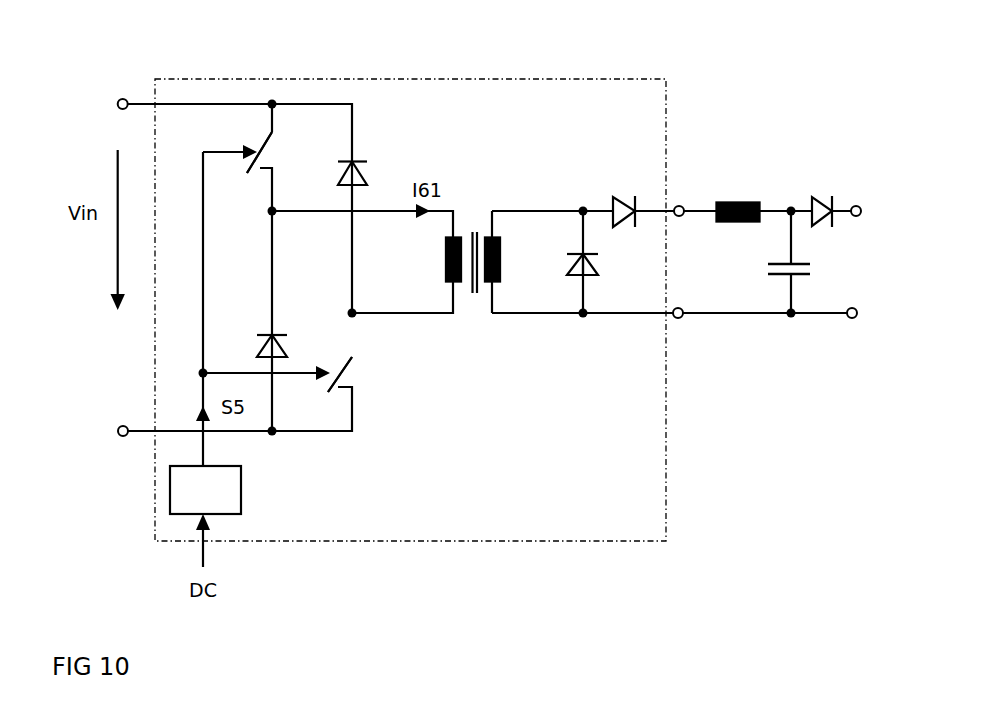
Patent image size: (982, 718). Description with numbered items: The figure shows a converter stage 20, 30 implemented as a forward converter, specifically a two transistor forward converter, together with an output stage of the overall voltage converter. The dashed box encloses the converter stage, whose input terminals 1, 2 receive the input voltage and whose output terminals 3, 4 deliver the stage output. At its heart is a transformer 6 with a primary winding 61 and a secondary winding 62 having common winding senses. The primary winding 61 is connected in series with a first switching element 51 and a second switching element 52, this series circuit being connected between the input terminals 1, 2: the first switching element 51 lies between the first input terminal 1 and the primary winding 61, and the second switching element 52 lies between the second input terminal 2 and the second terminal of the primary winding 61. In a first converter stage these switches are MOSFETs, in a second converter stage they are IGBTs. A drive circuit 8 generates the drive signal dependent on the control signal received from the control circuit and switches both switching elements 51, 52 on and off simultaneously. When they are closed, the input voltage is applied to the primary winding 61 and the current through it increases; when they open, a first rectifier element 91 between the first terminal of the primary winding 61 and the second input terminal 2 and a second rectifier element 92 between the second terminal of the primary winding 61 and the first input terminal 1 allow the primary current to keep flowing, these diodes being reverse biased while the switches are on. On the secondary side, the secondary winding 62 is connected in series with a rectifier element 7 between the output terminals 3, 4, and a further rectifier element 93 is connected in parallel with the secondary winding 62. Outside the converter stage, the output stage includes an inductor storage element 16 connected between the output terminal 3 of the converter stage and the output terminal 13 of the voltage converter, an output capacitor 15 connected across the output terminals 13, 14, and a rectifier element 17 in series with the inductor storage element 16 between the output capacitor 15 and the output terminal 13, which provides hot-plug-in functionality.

The first input terminal 1 is at (122, 98).
The second input terminal 2 is at (123, 425).
The output terminal 3 is at (680, 205).
The output terminal 4 is at (679, 320).
The first switching element 51 is at (264, 158).
The second switching element 52 is at (352, 373).
The transformer 6 is at (470, 192).
The primary winding 61 is at (445, 262).
The secondary winding 62 is at (560, 260).
The rectifier element 7 is at (625, 195).
The drive circuit 8 is at (243, 493).
The first rectifier element 91 is at (262, 328).
The second rectifier element 92 is at (367, 169).
The further rectifier element 93 is at (598, 265).
The output terminal 13 is at (857, 205).
The output terminal 14 is at (853, 320).
The output capacitor 15 is at (760, 264).
The inductor storage element 16 is at (738, 202).
The rectifier element 17 is at (823, 192).
The converter stage 20 is at (413, 78).
The converter stage 30 is at (410, 310).